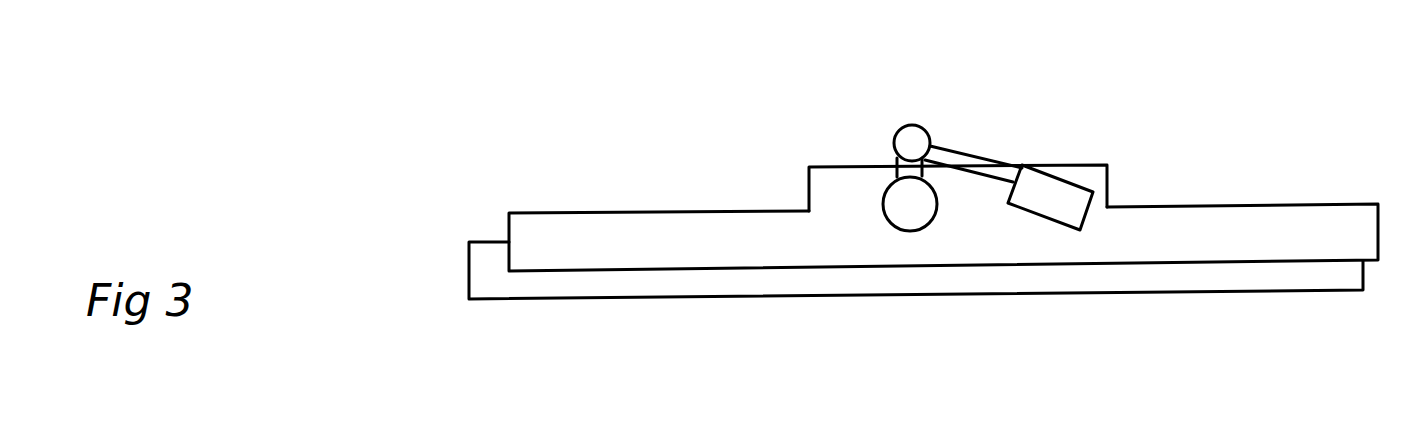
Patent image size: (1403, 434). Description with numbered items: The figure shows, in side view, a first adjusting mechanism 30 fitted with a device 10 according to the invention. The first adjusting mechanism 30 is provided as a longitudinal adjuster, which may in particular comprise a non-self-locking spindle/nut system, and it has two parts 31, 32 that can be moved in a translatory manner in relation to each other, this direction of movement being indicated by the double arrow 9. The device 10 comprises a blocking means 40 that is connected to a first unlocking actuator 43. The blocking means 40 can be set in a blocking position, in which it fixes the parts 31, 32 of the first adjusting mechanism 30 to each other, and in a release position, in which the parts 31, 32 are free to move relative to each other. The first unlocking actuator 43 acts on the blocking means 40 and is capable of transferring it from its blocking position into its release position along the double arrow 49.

The direction of movement 9 is at (592, 155).
The device 10 is at (970, 119).
The first adjusting mechanism 30 is at (769, 90).
The part of the first adjusting mechanism 31 is at (1235, 213).
The part of the first adjusting mechanism 32 is at (1243, 280).
The blocking means 40 is at (912, 140).
The first unlocking actuator 43 is at (1037, 192).
The double arrow 49 is at (982, 134).